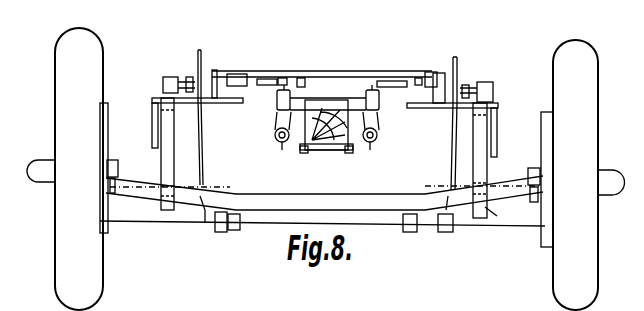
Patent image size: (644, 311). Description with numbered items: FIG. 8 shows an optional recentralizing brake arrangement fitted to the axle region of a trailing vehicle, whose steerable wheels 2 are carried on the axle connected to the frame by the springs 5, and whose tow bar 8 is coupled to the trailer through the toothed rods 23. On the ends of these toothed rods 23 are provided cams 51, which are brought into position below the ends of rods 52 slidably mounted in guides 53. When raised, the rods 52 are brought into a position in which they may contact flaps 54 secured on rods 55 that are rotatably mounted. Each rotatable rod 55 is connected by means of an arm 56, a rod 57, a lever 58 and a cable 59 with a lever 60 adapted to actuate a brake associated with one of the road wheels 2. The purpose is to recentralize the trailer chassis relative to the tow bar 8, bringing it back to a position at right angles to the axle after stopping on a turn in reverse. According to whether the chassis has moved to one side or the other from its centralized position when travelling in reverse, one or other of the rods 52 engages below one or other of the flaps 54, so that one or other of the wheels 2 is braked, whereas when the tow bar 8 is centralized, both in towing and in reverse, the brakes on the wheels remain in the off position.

The steerable wheels 2 is at (80, 263).
The springs 5 is at (165, 197).
The tow bar 8 is at (336, 148).
The toothed rods 23 is at (282, 143).
The cams 51 is at (282, 120).
The rods 52 is at (372, 95).
The guides 53 is at (278, 105).
The flaps 54 is at (268, 78).
The rods 55 is at (240, 77).
The arm 56 is at (197, 66).
The rod 57 is at (200, 52).
The lever 58 is at (198, 110).
The cable 59 is at (202, 143).
The lever 60 is at (202, 223).